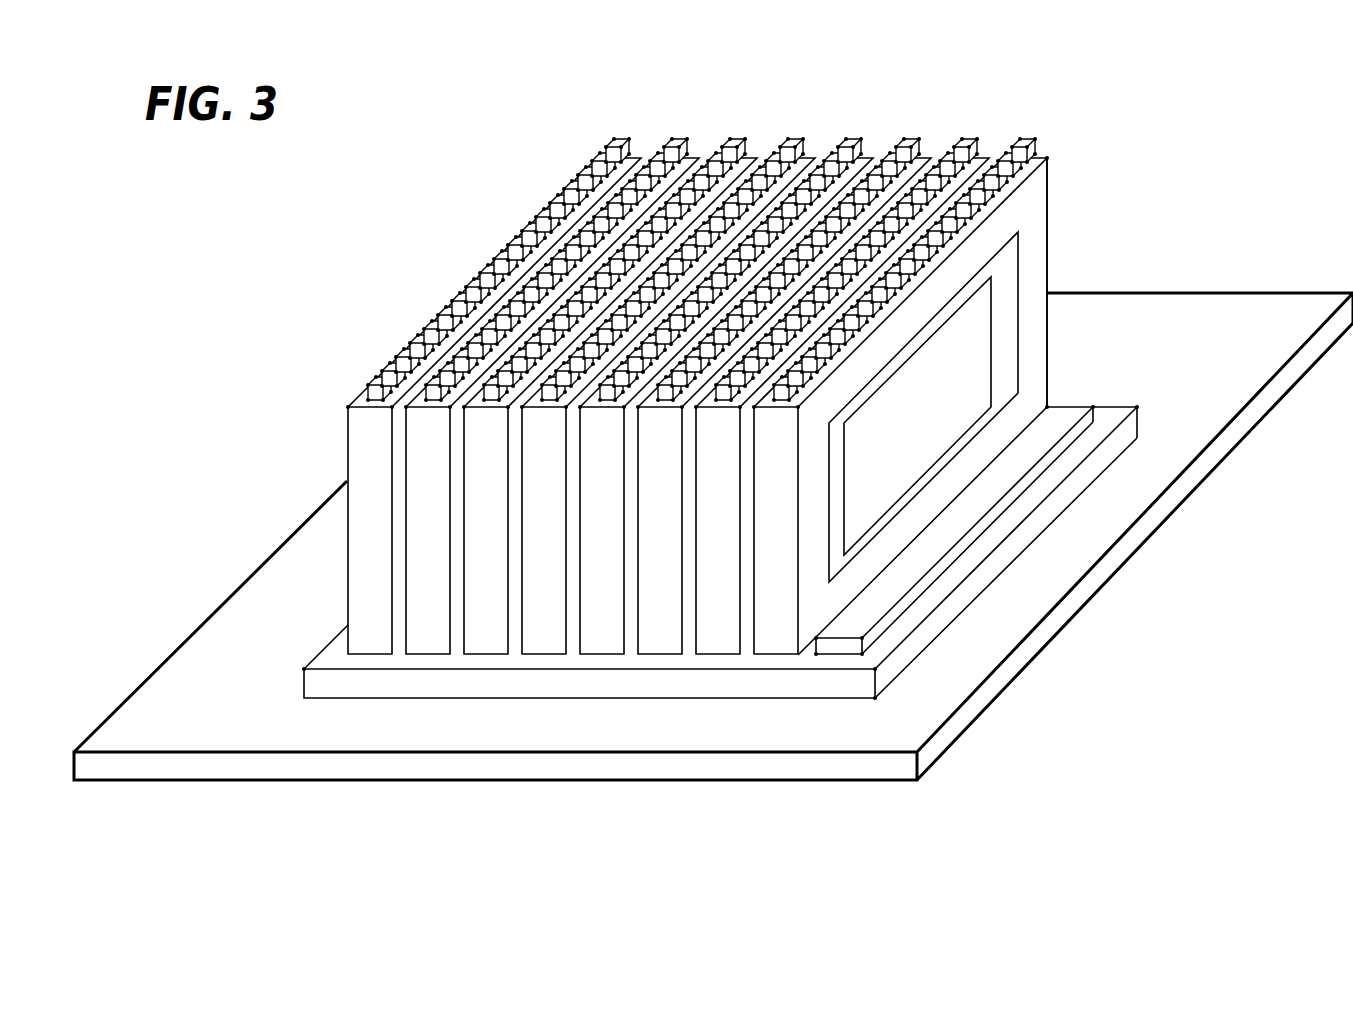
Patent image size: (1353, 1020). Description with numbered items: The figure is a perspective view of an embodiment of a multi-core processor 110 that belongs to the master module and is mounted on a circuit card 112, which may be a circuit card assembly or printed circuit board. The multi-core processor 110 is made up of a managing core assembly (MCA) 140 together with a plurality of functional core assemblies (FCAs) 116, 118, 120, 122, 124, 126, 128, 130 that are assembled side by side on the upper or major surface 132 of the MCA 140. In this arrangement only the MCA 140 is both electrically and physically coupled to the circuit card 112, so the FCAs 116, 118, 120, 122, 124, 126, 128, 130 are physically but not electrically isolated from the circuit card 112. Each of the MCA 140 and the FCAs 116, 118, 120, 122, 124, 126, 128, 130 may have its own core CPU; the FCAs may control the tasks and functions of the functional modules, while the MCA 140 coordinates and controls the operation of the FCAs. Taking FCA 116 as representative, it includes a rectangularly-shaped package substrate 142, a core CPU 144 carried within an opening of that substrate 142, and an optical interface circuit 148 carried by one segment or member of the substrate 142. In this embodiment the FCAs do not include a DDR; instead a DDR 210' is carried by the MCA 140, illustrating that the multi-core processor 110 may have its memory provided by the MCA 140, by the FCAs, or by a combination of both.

The multi-core processor 110 is at (492, 241).
The circuit card 112 is at (176, 682).
The functional core assembly 116 is at (745, 449).
The functional core assembly 118 is at (685, 469).
The functional core assembly 120 is at (626, 488).
The functional core assembly 122 is at (568, 511).
The functional core assembly 124 is at (511, 532).
The functional core assembly 126 is at (452, 555).
The functional core assembly 128 is at (395, 582).
The functional core assembly 130 is at (336, 604).
The upper surface 132 is at (687, 663).
The managing core assembly 140 is at (902, 664).
The substrate 142 is at (1060, 201).
The core CPU 144 is at (1002, 377).
The optical interface circuit 148 is at (1033, 125).
The DDR 210' is at (1052, 530).